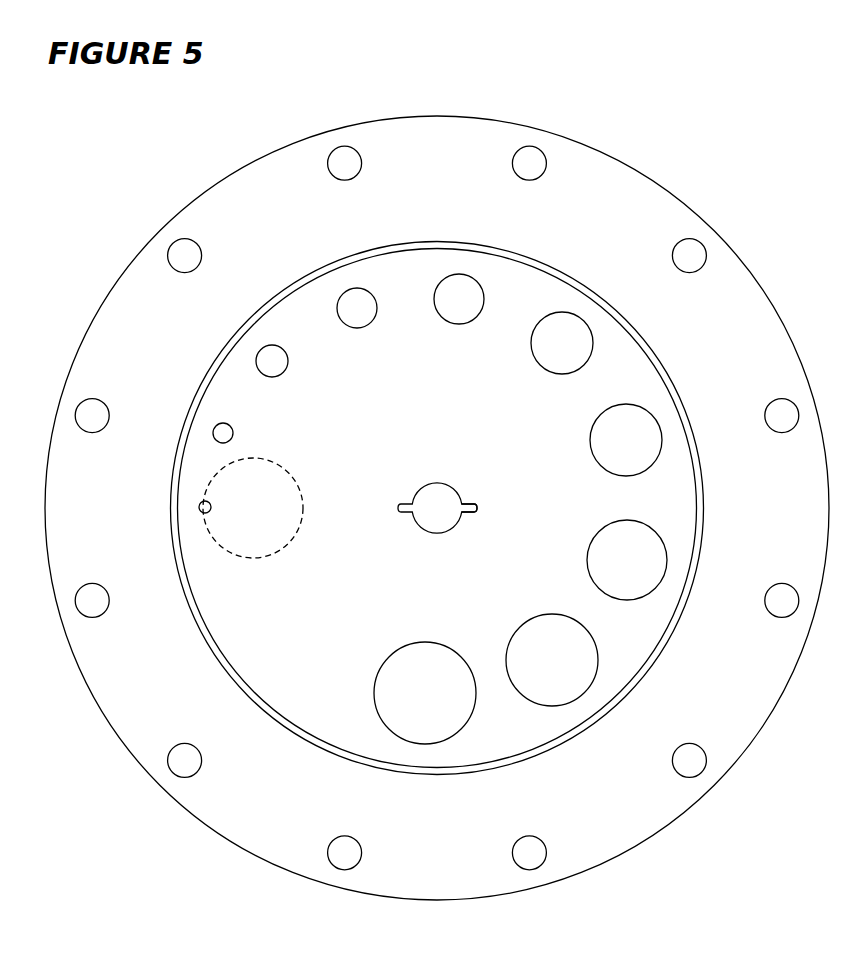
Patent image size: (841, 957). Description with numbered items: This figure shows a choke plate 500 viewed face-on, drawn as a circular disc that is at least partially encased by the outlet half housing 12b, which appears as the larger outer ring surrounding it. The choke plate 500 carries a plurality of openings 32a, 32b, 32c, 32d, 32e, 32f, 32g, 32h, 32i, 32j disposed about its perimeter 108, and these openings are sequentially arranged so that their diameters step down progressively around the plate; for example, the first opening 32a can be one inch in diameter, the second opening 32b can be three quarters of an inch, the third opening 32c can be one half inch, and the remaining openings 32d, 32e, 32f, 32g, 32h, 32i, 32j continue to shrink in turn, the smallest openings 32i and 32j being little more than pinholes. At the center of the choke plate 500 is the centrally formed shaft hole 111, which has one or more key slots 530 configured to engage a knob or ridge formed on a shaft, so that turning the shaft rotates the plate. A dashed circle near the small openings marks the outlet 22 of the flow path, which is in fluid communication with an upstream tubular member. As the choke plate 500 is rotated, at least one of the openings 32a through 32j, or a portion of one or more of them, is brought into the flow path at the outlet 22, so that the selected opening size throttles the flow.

The outlet half housing 12b is at (247, 164).
The perimeter 108 is at (700, 508).
The choke plate 500 is at (240, 645).
The outlet 22 is at (270, 456).
The shaft hole 111 is at (428, 477).
The key slot 530 is at (472, 494).
The first opening 32a is at (415, 634).
The second opening 32b is at (533, 610).
The third opening 32c is at (609, 516).
The opening 32d is at (626, 396).
The opening 32e is at (564, 302).
The opening 32f is at (460, 265).
The opening 32g is at (355, 278).
The opening 32h is at (268, 334).
The opening 32i is at (220, 413).
The opening 32j is at (200, 487).